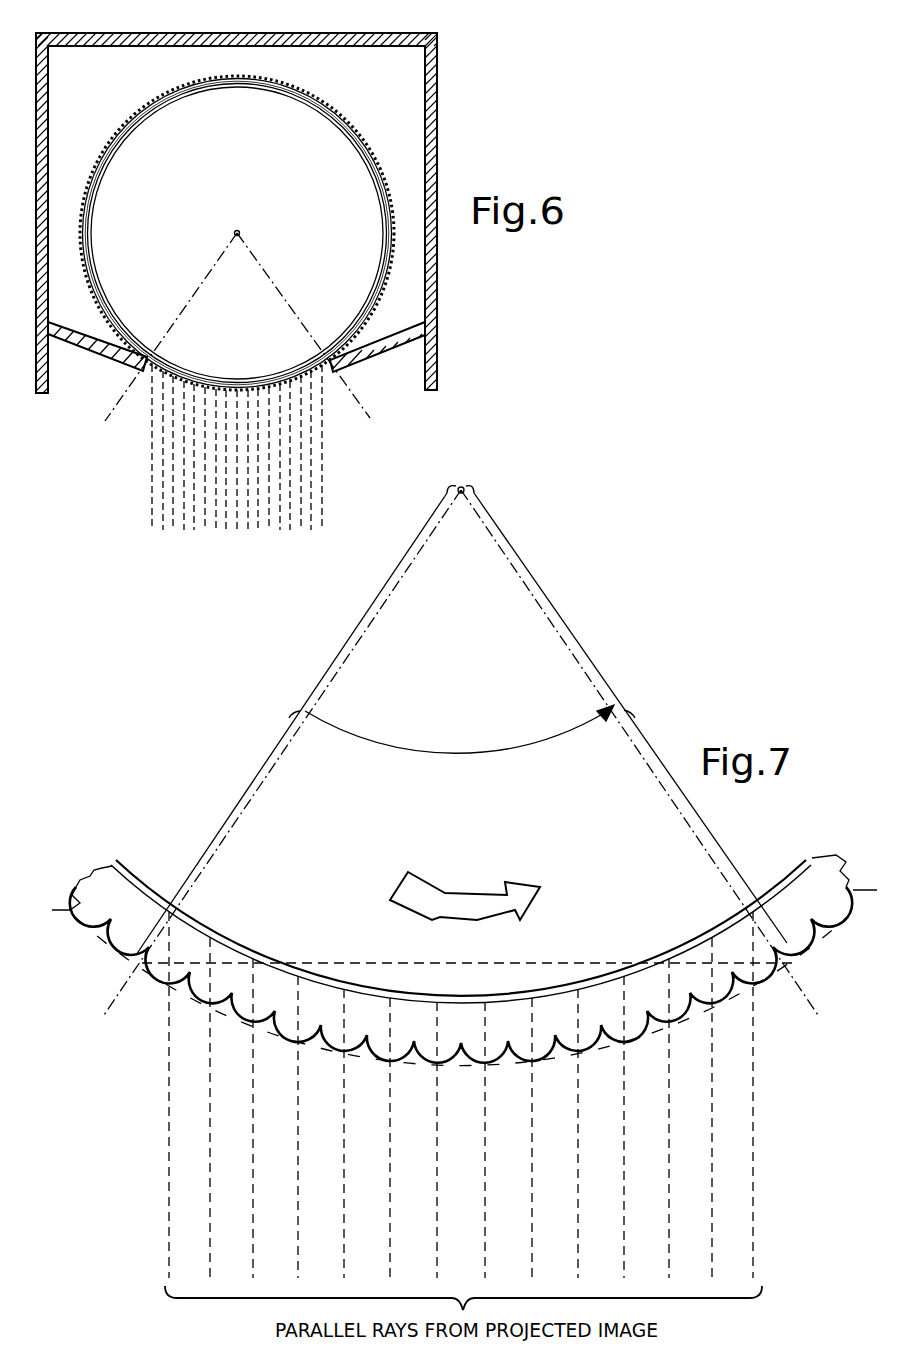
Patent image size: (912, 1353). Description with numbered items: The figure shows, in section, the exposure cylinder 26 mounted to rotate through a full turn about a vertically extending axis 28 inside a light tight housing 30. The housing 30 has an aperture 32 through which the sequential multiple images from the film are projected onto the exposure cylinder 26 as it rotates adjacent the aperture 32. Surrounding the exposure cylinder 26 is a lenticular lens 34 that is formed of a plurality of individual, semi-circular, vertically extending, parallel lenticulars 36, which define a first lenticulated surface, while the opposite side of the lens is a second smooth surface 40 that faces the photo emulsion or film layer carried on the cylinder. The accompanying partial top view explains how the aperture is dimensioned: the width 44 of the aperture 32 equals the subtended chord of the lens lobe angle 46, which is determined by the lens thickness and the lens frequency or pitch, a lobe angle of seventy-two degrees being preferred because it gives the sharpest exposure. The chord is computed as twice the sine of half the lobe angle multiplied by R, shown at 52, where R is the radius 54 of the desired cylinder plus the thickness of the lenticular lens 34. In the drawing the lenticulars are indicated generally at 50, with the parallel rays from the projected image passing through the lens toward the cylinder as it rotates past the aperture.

In FIG. 6, the exposure cylinder 26 is at (346, 283).
In FIG. 6, the vertically extending axis 28 is at (239, 231).
In FIG. 7, the vertically extending axis 28 is at (463, 487).
In FIG. 6, the light tight housing 30 is at (440, 119).
In FIG. 6, the aperture 32 is at (333, 372).
In FIG. 6, the lenticular lens 34 is at (332, 102).
In FIG. 7, the lenticular lens 34 is at (848, 893).
In FIG. 6, the lenticulars 36 is at (375, 152).
In FIG. 7, the lenticulars 36 is at (778, 965).
In FIG. 6, the smooth surface 40 is at (165, 100).
In FIG. 7, the smooth surface 40 is at (790, 877).
In FIG. 7, the width of the aperture 44 is at (583, 962).
In FIG. 7, the lens lobe angle 46 is at (447, 752).
In FIG. 7, the lenticular lens array 50 is at (175, 992).
In FIG. 7, the R 52 is at (300, 711).
In FIG. 7, the radius of the desired cylinder 54 is at (636, 712).